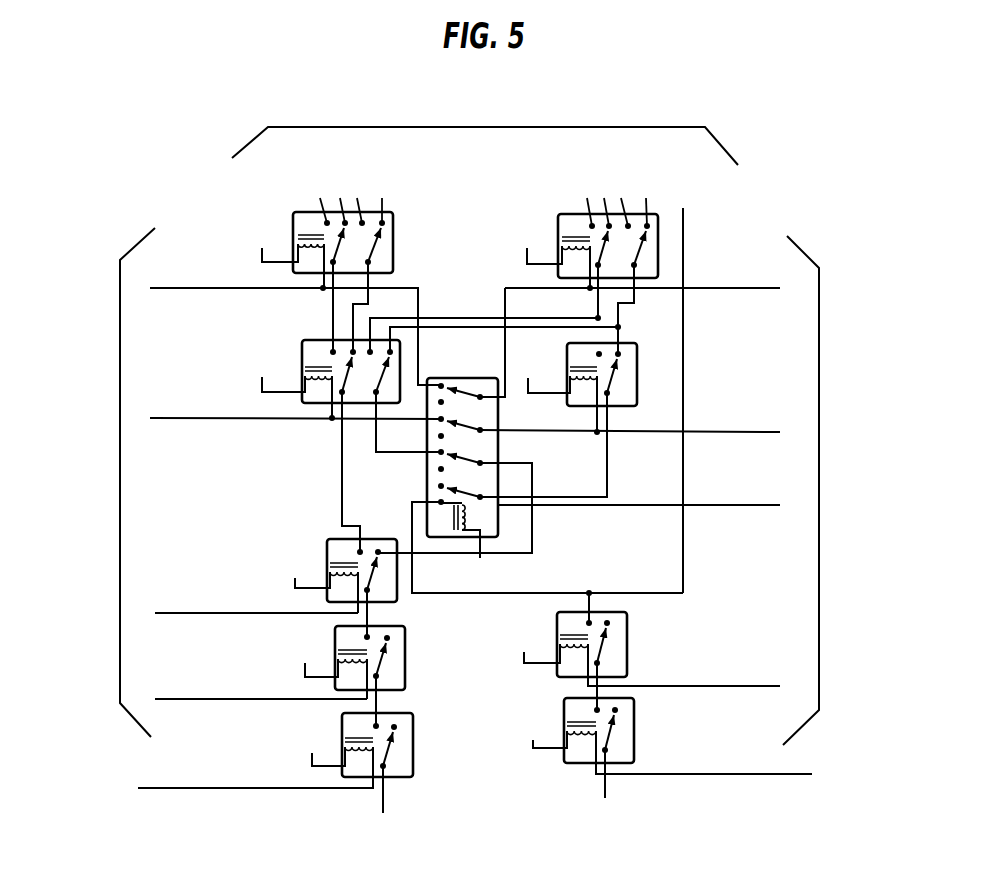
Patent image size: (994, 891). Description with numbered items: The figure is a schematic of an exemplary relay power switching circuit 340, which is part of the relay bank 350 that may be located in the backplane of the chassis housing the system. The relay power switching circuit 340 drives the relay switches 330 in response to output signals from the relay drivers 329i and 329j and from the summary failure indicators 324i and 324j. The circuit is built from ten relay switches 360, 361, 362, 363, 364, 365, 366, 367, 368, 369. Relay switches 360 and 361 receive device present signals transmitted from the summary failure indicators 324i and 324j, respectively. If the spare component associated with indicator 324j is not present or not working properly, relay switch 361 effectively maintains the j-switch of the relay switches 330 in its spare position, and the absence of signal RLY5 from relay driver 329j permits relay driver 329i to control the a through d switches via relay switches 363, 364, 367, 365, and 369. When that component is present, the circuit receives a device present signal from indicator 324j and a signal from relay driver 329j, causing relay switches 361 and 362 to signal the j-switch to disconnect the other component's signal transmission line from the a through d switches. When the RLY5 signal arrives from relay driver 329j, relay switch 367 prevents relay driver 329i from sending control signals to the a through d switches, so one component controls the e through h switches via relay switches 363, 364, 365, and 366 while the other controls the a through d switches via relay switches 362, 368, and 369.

The relay power switching circuit 340 is at (737, 100).
The relay bank 350 is at (485, 130).
The relay switches 330 is at (498, 369).
The relay driver 329i is at (243, 478).
The relay driver 329j is at (685, 472).
The summary failure indicator 324i is at (220, 786).
The summary failure indicator 324j is at (739, 770).
The relay switch 360 is at (437, 748).
The relay switch 361 is at (660, 732).
The relay switch 362 is at (650, 642).
The relay switch 363 is at (427, 663).
The relay switch 364 is at (327, 539).
The relay switch 365 is at (312, 340).
The relay switch 366 is at (300, 210).
The relay switch 367 is at (428, 483).
The relay switch 368 is at (658, 375).
The relay switch 369 is at (565, 212).